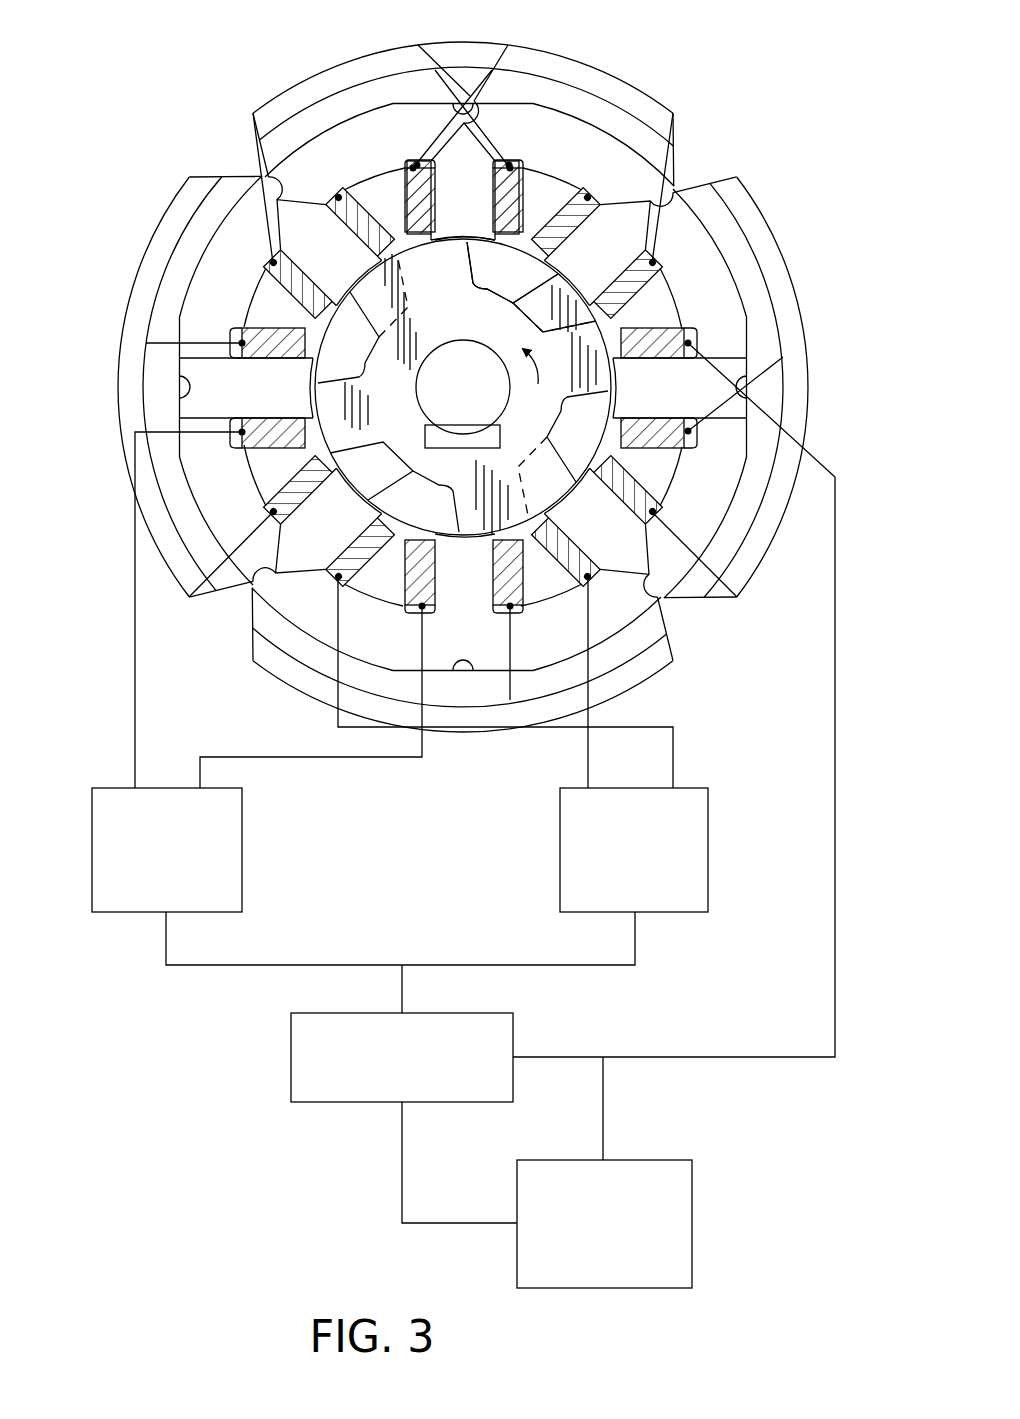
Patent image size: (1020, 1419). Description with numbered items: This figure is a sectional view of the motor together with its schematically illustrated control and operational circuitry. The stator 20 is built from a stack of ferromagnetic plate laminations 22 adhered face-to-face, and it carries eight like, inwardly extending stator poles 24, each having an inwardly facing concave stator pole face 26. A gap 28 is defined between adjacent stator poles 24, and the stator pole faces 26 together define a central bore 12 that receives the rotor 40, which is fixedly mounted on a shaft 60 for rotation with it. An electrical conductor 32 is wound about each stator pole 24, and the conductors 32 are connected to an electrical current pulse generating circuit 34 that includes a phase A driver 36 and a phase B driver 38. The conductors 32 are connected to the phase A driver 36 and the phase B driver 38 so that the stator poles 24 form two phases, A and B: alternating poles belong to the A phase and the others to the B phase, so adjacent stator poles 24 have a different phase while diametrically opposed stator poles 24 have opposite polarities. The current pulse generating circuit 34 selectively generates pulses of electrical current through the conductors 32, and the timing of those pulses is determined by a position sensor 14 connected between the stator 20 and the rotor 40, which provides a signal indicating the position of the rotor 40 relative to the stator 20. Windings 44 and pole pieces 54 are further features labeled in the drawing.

The central bore 12 is at (407, 507).
The position sensor 14 is at (440, 450).
The stator 20 is at (574, 97).
The plate laminations 22 is at (577, 137).
The stator poles 24 is at (673, 395).
The stator pole faces 26 is at (563, 404).
The gap 28 is at (377, 575).
The electrical conductor 32 is at (680, 497).
The electrical current pulse generating circuit 34 is at (240, 1040).
The phase A driver 36 is at (120, 912).
The phase B driver 38 is at (708, 820).
The rotor 40 is at (447, 258).
The phase A coil 44 is at (350, 468).
The phase B pole piece 54 is at (655, 615).
The shaft 60 is at (445, 353).